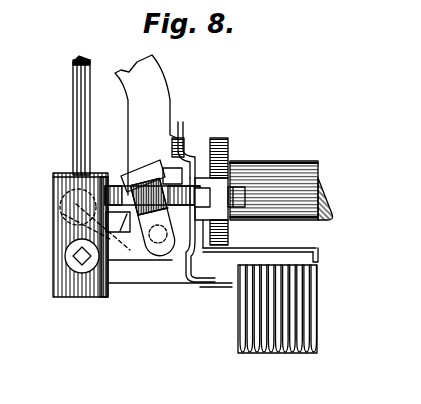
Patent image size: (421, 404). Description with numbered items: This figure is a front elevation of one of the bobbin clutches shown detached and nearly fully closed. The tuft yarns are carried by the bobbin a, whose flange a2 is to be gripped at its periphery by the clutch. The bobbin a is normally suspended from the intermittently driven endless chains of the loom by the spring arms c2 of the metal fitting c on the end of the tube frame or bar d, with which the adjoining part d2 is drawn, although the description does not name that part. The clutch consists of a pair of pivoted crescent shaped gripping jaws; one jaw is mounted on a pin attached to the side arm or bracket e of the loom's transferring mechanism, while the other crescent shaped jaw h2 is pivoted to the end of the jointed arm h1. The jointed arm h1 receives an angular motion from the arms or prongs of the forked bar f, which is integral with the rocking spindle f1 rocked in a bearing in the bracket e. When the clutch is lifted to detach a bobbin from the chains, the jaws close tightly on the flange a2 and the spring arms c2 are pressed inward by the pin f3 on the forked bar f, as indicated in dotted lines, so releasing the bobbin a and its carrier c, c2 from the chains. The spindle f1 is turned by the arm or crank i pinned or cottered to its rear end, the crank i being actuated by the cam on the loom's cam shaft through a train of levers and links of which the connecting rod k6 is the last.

The rod k6 is at (76, 100).
The block i is at (118, 222).
The bar h1 is at (120, 192).
The plate e is at (146, 125).
The block c2 is at (180, 136).
The strip c is at (191, 306).
The arm f3 is at (167, 171).
The cylinder f is at (149, 262).
The pivot f1 is at (160, 262).
The gear a2 is at (223, 140).
The sleeve h2 is at (232, 163).
The shaft a is at (330, 192).
The plate d is at (316, 252).
The comb d2 is at (318, 313).